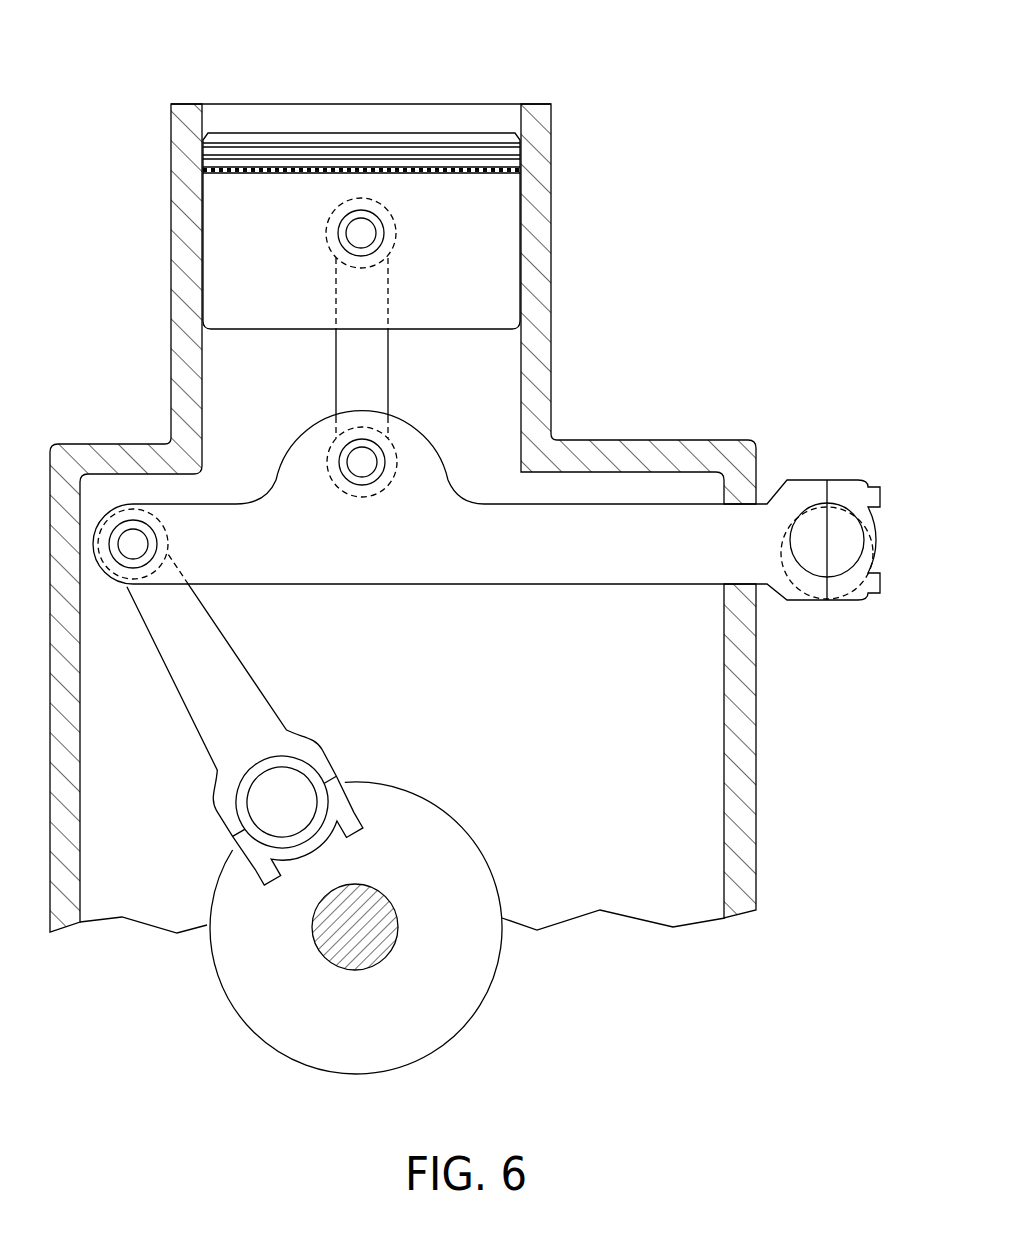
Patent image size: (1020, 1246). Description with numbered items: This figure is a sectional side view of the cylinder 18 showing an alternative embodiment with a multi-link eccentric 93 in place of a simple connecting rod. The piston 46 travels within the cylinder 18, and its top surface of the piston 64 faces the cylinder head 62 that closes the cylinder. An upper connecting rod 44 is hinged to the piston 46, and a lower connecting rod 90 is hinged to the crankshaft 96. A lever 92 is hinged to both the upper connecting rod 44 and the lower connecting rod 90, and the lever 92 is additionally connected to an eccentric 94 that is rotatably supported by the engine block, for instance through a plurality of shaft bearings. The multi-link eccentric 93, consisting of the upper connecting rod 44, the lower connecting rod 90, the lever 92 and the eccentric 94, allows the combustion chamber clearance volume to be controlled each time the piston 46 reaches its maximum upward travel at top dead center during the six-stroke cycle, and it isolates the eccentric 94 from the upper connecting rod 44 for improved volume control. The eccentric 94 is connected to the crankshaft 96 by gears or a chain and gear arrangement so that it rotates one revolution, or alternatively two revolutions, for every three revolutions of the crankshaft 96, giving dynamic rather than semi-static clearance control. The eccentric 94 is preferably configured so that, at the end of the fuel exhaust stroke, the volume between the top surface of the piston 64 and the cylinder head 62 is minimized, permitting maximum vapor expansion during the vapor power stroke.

The cylinder 18 is at (580, 202).
The upper connecting rod 44 is at (378, 390).
The piston 46 is at (477, 250).
The cylinder head 62 is at (362, 103).
The top surface of the piston 64 is at (463, 132).
The lower connecting rod 90 is at (184, 670).
The lever 92 is at (648, 557).
The multi-link eccentric 93 is at (486, 558).
The eccentric 94 is at (783, 567).
The crankshaft 96 is at (430, 944).